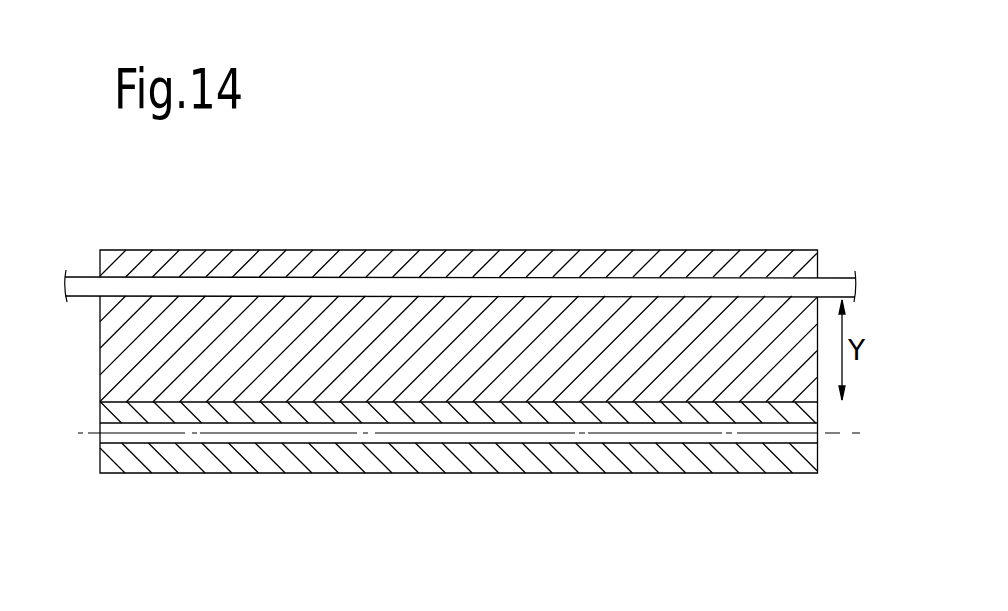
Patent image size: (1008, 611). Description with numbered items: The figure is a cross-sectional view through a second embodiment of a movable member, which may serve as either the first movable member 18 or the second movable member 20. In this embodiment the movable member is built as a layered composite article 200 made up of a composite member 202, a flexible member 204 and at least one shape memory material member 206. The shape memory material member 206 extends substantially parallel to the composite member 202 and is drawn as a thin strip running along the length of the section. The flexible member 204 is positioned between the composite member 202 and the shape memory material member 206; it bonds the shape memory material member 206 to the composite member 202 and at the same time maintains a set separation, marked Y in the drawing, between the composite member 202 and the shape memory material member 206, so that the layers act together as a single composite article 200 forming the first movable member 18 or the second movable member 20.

The first movable member 18 is at (620, 220).
The second movable member 20 is at (462, 359).
The composite article 200 is at (730, 246).
The composite member 202 is at (465, 457).
The flexible member 204 is at (162, 378).
The shape memory material member 206 is at (205, 283).